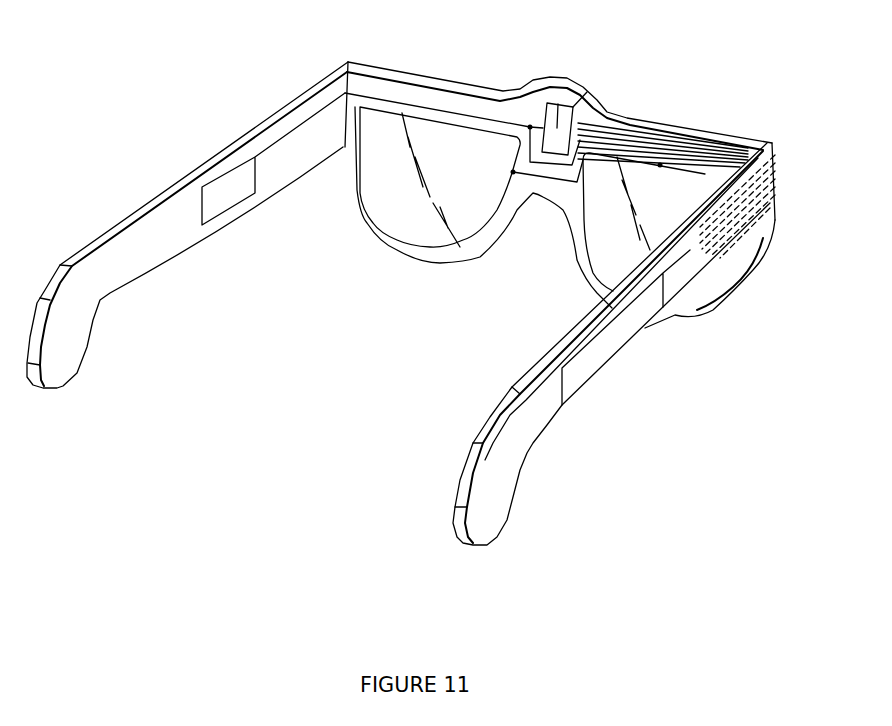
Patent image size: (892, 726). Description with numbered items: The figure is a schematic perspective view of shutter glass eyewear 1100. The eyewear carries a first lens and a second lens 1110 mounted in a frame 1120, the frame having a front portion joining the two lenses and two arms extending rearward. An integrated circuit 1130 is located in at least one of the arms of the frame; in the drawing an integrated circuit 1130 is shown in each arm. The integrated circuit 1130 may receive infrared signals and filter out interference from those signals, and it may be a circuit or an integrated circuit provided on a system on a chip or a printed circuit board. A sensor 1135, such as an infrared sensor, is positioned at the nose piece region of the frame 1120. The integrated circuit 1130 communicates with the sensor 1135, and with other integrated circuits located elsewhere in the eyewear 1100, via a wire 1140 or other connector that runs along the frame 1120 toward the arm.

The shutter glass eyewear 1100 is at (430, 289).
The first lens and second lens 1110 is at (368, 218).
The frame 1120 is at (437, 84).
The integrated circuit 1130 is at (231, 192).
The sensor 1135 is at (557, 120).
The wire 1140 is at (702, 160).